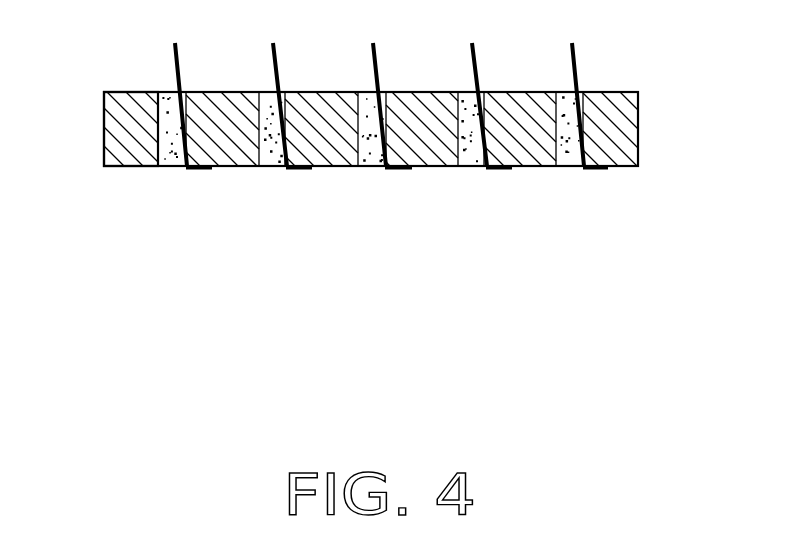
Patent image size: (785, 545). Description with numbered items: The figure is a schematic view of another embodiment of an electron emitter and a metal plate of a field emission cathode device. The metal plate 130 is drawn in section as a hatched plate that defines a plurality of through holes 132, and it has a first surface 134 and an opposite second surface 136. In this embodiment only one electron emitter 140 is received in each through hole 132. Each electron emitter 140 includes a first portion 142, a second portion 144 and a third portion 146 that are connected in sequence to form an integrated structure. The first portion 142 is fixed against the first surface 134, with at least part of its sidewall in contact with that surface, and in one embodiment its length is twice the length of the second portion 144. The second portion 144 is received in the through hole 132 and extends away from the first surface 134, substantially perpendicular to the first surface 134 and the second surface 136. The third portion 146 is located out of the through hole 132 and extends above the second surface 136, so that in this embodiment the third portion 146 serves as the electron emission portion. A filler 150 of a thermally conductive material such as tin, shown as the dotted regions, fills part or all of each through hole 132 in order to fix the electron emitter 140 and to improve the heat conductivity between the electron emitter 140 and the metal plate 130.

The metal plate 130 is at (613, 137).
The through hole 132 is at (170, 92).
The first surface 134 is at (147, 167).
The second surface 136 is at (613, 92).
The electron emitter 140 is at (427, 176).
The first portion 142 is at (442, 259).
The second portion 144 is at (589, 114).
The third portion 146 is at (571, 44).
The filler 150 is at (165, 147).